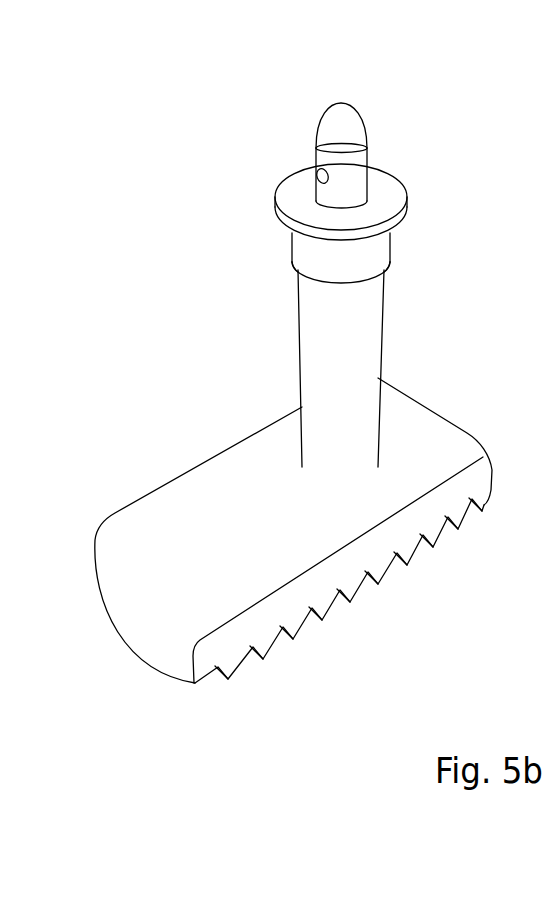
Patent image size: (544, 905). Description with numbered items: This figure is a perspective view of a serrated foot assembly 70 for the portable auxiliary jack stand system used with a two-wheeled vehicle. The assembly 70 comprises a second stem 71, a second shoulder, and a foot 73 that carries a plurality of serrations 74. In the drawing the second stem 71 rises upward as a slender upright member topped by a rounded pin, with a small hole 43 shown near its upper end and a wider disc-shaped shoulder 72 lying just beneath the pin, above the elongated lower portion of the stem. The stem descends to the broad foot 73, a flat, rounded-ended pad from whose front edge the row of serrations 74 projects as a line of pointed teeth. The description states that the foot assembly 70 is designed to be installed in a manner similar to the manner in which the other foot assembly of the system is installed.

The serrated foot assembly 70 is at (173, 222).
The second stem 71 is at (368, 151).
The hole 43 is at (319, 174).
The flange 72 is at (407, 199).
The foot 73 is at (172, 508).
The serrations 74 is at (465, 515).